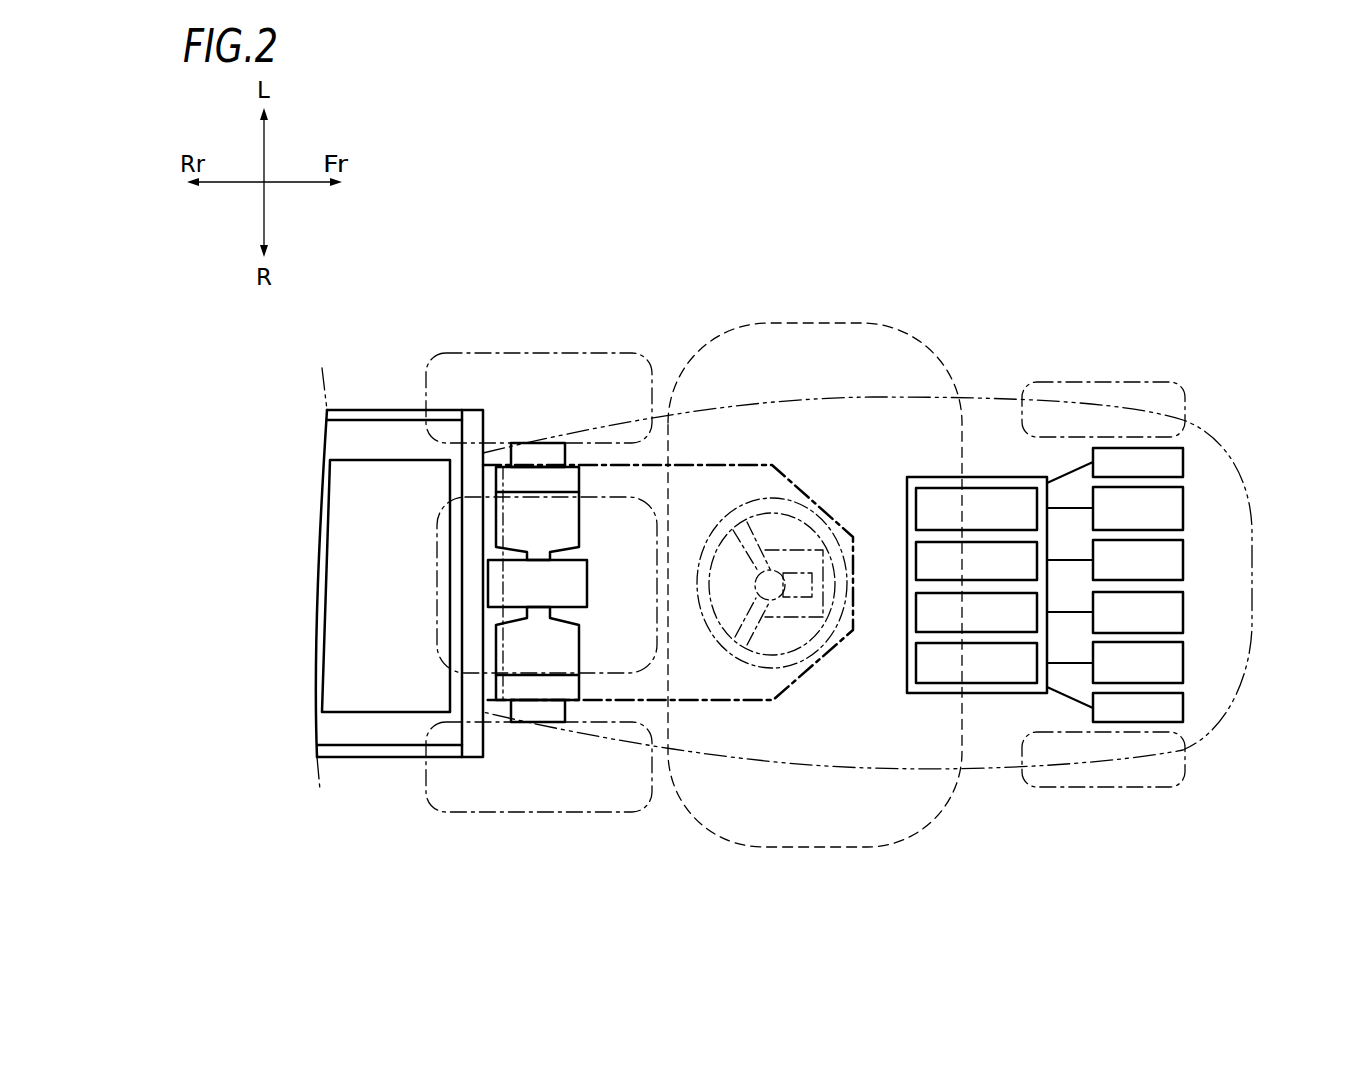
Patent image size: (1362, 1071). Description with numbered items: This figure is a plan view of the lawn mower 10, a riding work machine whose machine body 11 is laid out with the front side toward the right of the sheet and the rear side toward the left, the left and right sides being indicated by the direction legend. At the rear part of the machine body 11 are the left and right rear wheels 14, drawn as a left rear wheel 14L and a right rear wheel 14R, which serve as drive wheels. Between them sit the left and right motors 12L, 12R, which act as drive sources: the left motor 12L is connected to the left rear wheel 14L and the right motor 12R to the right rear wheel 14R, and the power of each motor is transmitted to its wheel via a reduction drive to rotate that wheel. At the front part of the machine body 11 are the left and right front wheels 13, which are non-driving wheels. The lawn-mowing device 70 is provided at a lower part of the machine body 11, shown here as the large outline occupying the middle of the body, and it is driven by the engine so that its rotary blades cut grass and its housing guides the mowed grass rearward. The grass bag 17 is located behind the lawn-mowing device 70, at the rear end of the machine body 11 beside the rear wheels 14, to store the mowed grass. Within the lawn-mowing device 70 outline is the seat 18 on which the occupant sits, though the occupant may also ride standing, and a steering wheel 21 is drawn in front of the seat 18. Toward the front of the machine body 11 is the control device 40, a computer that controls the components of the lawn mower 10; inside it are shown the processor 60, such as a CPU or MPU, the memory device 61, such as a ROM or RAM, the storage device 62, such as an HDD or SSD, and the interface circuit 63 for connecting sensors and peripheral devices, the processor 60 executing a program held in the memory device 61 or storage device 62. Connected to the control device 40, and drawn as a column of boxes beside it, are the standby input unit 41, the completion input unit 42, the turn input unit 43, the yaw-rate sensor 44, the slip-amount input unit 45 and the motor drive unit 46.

The lawn mower 10 is at (822, 510).
The machine body 11 is at (1252, 570).
The left motor 12L is at (558, 535).
The right motor 12R is at (558, 655).
The front wheels 13 is at (1116, 382).
The rear wheels 14 is at (539, 585).
The left rear wheel 14L is at (540, 353).
The right rear wheel 14R is at (555, 812).
The grass bag 17 is at (358, 410).
The seat 18 is at (653, 637).
The steering wheel 21 is at (822, 648).
The control device 40 is at (950, 553).
The standby input unit 41 is at (1183, 462).
The completion input unit 42 is at (1183, 503).
The turn input unit 43 is at (1183, 557).
The yaw-rate sensor 44 is at (1183, 620).
The slip-amount input unit 45 is at (1183, 668).
The motor drive unit 46 is at (1183, 707).
The processor 60 is at (907, 507).
The memory device 61 is at (907, 557).
The storage device 62 is at (907, 612).
The interface circuit 63 is at (907, 662).
The lawn-mowing device 70 is at (842, 847).